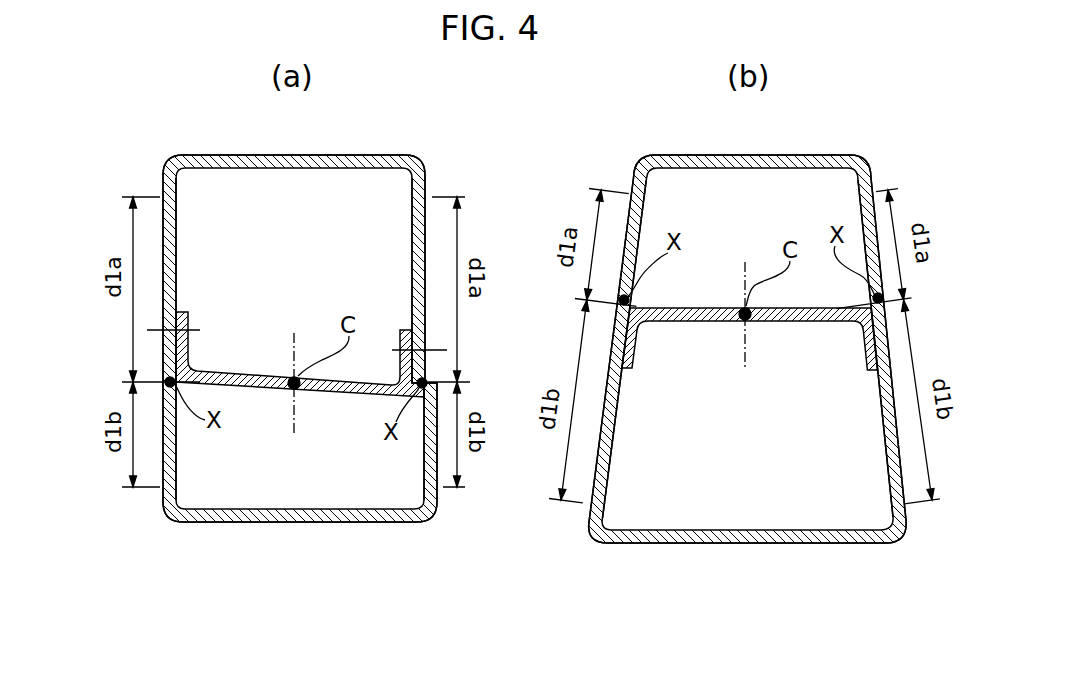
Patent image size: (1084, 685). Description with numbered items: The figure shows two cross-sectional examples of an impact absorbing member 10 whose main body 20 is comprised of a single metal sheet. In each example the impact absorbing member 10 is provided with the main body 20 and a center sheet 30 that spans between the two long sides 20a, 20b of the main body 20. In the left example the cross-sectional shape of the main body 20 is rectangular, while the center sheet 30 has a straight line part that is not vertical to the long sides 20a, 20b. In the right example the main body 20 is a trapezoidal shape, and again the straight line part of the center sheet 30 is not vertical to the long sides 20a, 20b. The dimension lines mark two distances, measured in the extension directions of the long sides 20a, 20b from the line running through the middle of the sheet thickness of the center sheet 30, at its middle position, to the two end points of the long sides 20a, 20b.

The impact absorbing member 10 is at (167, 146).
The main body 20 is at (311, 523).
The long side 20a is at (412, 265).
The long side 20b is at (177, 265).
The center sheet 30 is at (333, 397).